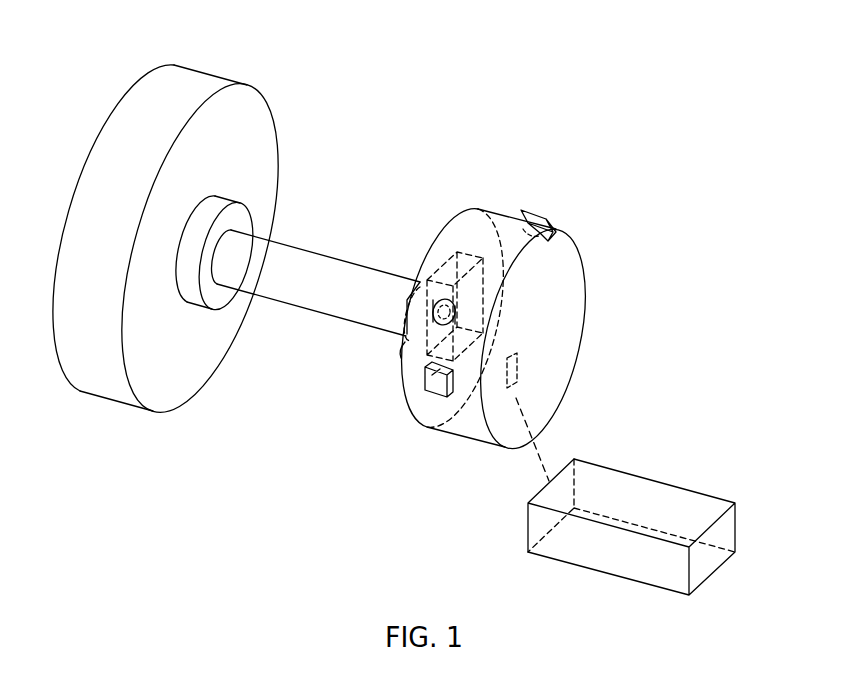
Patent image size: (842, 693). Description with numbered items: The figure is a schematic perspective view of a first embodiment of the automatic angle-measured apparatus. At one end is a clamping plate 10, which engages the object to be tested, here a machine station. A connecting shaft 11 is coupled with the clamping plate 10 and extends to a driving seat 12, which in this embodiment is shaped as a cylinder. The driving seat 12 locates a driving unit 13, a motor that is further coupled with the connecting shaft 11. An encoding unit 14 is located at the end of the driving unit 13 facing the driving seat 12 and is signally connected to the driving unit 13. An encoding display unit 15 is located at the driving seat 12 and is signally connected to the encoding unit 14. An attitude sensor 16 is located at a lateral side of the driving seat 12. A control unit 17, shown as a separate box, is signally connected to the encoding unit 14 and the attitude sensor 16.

The clamping plate 10 is at (245, 102).
The connecting shaft 11 is at (280, 260).
The driving seat 12 is at (562, 275).
The driving unit 13 is at (448, 258).
The encoding unit 14 is at (458, 250).
The encoding display unit 15 is at (517, 368).
The attitude sensor 16 is at (533, 210).
The control unit 17 is at (688, 507).